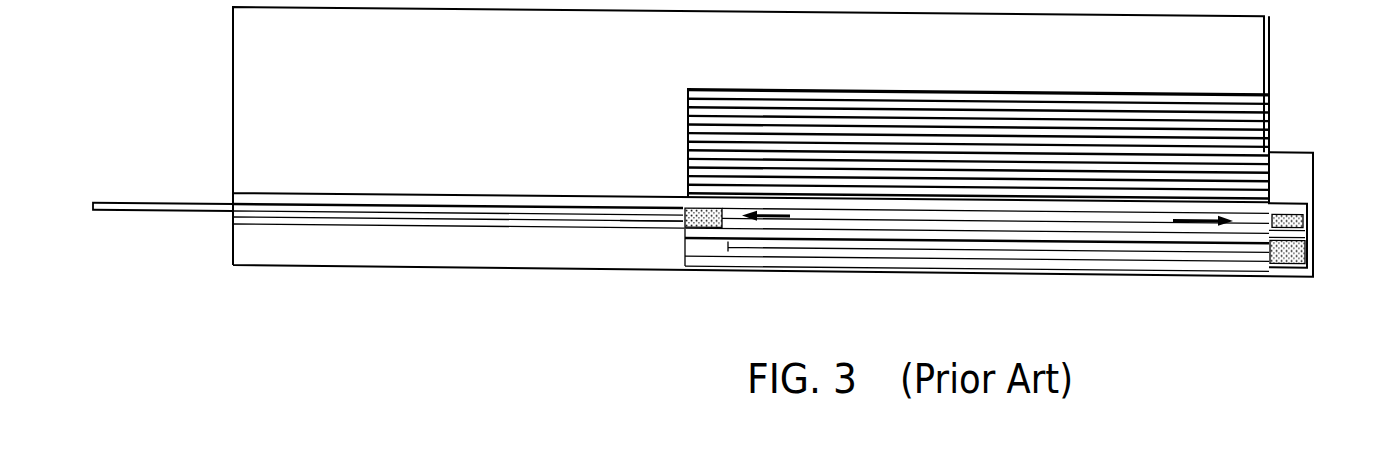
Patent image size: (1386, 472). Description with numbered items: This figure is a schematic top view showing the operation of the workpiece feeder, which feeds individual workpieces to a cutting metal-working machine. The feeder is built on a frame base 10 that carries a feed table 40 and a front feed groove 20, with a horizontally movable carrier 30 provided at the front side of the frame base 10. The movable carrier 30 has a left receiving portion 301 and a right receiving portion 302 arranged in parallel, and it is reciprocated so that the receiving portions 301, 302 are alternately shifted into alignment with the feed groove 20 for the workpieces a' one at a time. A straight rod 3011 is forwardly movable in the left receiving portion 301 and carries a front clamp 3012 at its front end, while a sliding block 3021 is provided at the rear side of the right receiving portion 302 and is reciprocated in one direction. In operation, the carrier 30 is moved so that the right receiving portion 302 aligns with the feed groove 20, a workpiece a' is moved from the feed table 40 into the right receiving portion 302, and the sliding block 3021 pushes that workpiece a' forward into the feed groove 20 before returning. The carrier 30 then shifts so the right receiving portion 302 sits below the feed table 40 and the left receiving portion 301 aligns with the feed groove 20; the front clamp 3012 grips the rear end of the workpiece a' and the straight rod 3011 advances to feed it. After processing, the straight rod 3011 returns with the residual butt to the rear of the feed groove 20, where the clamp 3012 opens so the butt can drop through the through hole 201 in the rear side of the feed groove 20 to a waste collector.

The frame base 10 is at (258, 125).
The feed groove 20 is at (388, 268).
The through hole 201 is at (632, 222).
The movable carrier 30 is at (1026, 240).
The left receiving portion 301 is at (1078, 250).
The straight rod 3011 is at (1157, 250).
The right receiving portion 302 is at (889, 215).
The sliding block 3021 is at (702, 238).
The front clamp 3012 is at (728, 242).
The feed table 40 is at (1240, 115).
The workpiece a' is at (163, 249).